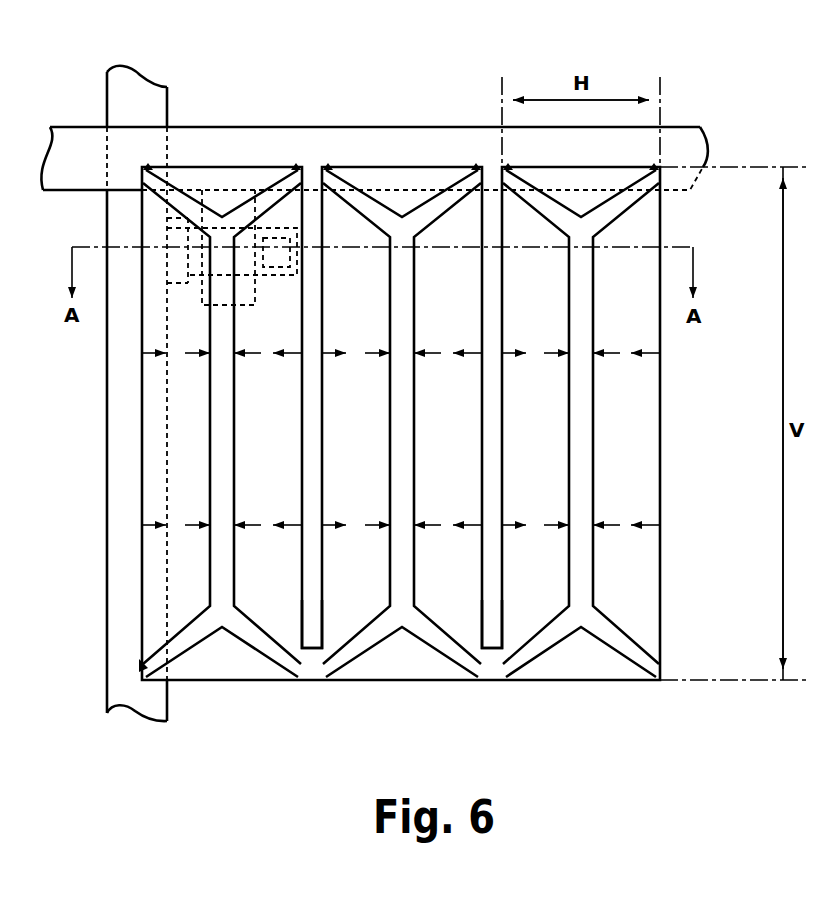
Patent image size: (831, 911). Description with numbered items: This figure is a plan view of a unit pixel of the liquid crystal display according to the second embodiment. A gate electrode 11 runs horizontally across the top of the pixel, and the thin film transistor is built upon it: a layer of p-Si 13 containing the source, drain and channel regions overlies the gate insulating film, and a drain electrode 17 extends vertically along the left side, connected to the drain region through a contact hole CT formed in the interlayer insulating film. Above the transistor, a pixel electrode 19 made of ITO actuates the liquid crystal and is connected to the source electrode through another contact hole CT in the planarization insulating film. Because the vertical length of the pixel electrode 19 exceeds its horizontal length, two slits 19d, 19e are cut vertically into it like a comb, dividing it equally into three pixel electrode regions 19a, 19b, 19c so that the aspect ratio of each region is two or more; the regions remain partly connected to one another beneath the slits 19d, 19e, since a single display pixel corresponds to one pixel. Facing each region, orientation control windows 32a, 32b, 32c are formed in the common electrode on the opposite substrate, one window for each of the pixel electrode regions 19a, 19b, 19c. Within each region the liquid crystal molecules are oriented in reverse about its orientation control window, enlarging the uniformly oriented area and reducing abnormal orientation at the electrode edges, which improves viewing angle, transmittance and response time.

The gate electrode 11 is at (675, 127).
The p-Si 13 is at (277, 225).
The drain electrode 17 is at (107, 217).
The pixel electrode 19 is at (397, 667).
The pixel electrode region 19a is at (187, 517).
The pixel electrode region 19b is at (452, 590).
The pixel electrode region 19c is at (630, 407).
The slit 19d is at (310, 645).
The slit 19e is at (489, 672).
The orientation control window 32a is at (218, 598).
The orientation control window 32b is at (403, 500).
The orientation control window 32c is at (587, 335).
The contact hole CT is at (313, 200).